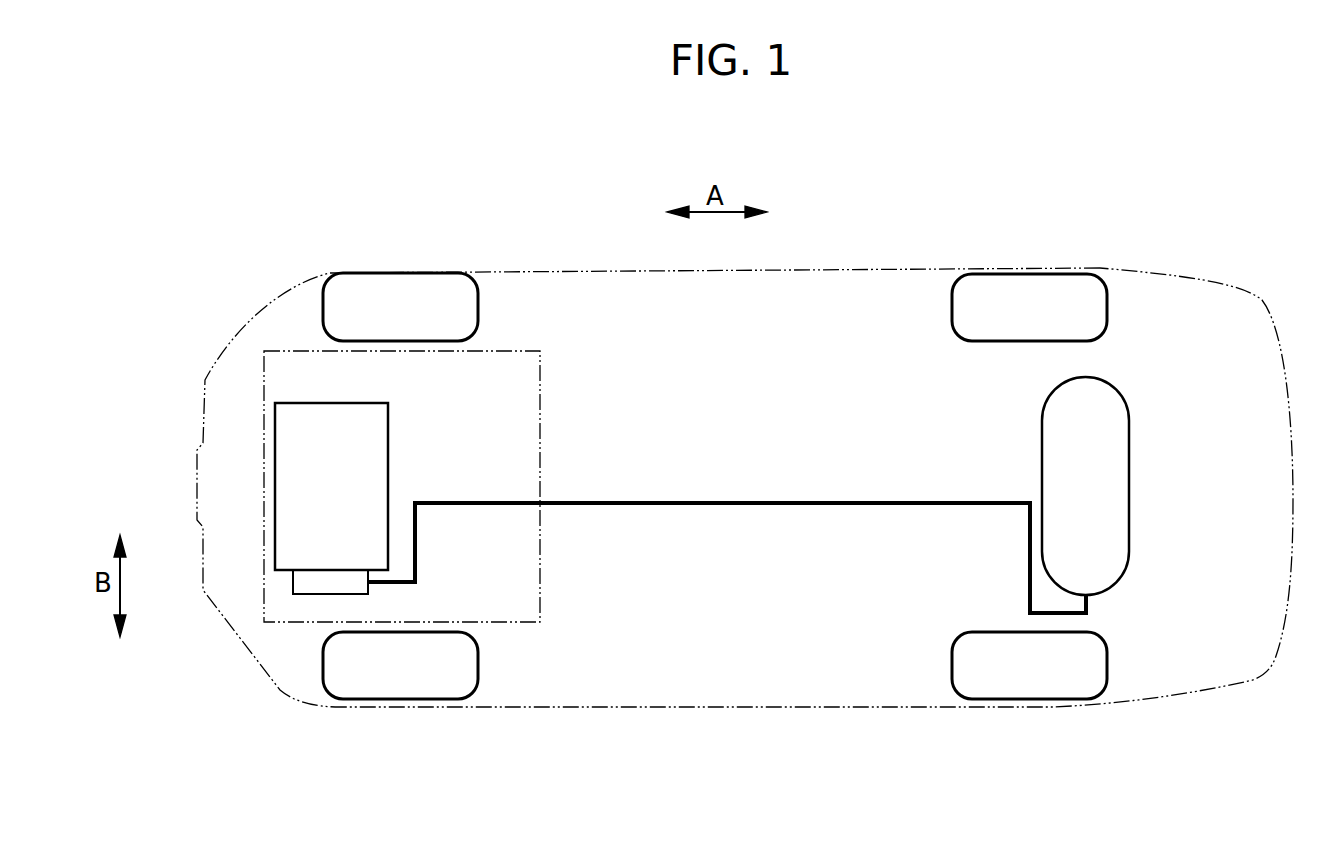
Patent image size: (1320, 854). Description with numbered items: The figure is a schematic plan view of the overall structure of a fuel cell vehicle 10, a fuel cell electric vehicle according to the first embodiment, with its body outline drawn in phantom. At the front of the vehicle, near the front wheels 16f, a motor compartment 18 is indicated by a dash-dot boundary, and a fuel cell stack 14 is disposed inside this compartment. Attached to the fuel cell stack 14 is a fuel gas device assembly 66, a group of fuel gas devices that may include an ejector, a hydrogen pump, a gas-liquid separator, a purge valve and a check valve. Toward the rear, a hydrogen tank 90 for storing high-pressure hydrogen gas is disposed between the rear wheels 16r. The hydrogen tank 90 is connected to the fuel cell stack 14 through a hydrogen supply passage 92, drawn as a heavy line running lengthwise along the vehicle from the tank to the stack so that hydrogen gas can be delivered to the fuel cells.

The fuel cell vehicle 10 is at (834, 115).
The fuel cell stack 14 is at (391, 532).
The front wheels 16f is at (366, 293).
The rear wheels 16r is at (998, 292).
The motor compartment 18 is at (541, 545).
The fuel gas device assembly 66 is at (310, 590).
The hydrogen tank 90 is at (1115, 480).
The hydrogen supply passage 92 is at (771, 505).